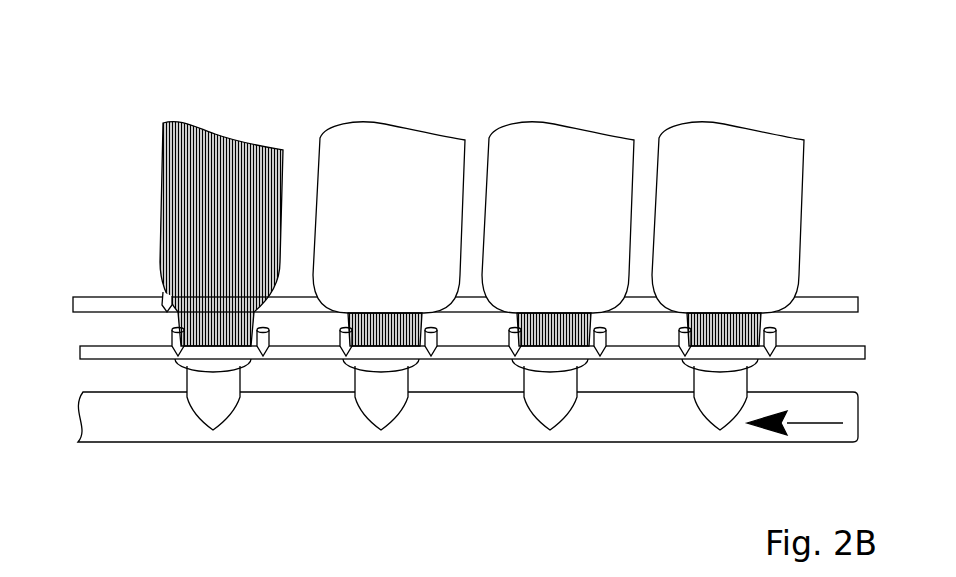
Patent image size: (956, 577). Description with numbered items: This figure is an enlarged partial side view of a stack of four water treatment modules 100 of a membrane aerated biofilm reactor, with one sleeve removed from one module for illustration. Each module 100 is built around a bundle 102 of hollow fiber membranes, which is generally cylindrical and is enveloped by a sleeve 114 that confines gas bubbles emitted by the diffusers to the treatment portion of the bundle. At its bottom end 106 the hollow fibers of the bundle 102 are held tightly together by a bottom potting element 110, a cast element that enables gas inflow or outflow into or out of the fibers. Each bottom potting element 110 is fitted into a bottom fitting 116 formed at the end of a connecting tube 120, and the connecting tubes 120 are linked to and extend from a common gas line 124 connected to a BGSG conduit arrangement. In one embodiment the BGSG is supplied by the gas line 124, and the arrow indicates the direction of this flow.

The module 100 is at (442, 252).
The bundle 102 is at (160, 165).
The bottom end 106 is at (165, 292).
The bottom potting element 110 is at (172, 341).
The sleeve 114 is at (395, 209).
The bottom fitting 116 is at (225, 369).
The connecting tube 120 is at (385, 377).
The gas line 124 is at (292, 422).